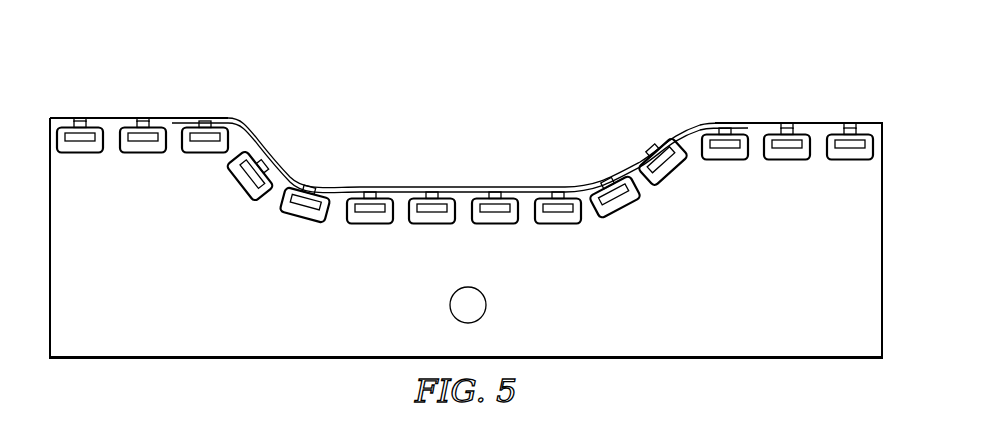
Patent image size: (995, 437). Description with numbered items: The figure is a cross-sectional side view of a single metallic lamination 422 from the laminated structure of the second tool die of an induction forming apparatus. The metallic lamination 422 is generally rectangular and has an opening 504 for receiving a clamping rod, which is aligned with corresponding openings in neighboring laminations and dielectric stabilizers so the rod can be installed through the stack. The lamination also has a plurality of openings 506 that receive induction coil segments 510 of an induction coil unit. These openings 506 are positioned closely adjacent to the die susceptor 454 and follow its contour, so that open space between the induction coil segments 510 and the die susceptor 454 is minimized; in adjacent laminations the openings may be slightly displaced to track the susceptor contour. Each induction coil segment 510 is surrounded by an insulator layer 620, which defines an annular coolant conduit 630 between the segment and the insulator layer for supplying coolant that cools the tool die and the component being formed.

The metallic lamination 422 is at (652, 64).
The die susceptor 454 is at (630, 158).
The opening 504 is at (466, 305).
The openings 506 is at (80, 127).
The induction coil segments 510 is at (370, 214).
The insulator layer 620 is at (105, 143).
The annular coolant conduit 630 is at (192, 146).